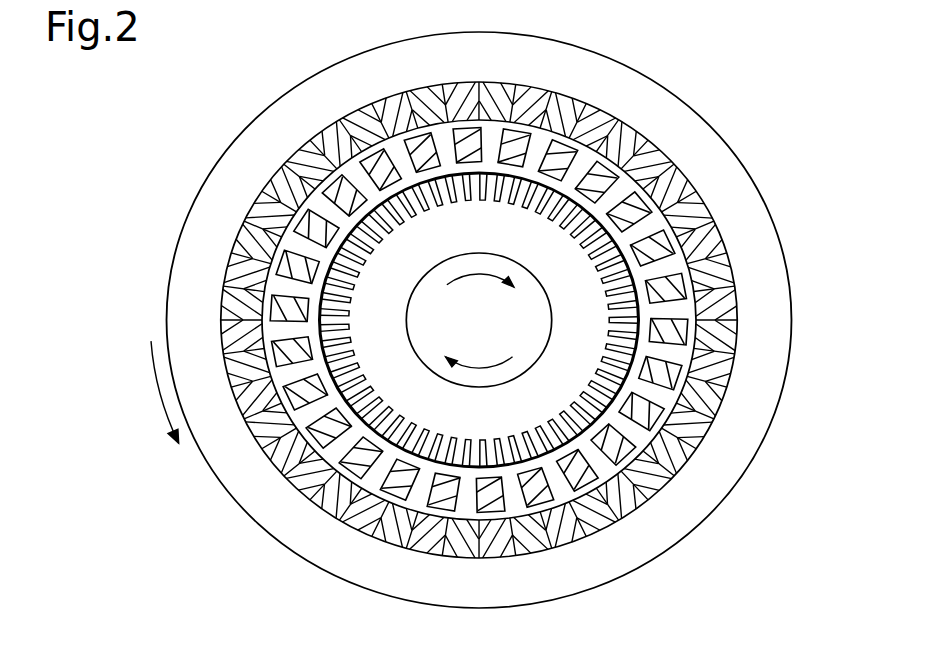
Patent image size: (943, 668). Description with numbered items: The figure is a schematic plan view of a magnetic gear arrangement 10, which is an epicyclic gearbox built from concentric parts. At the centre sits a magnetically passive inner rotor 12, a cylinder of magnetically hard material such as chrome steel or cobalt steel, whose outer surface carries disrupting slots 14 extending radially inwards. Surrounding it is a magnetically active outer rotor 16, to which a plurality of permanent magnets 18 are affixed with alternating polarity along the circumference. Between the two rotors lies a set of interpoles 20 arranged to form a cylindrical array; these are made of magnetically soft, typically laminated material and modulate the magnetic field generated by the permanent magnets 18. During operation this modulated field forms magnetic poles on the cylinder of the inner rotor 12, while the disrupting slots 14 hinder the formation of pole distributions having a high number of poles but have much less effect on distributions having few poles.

The magnetic gear arrangement 10 is at (258, 102).
The inner rotor 12 is at (382, 277).
The disrupting slots 14 is at (272, 177).
The outer rotor 16 is at (560, 72).
The permanent magnets 18 is at (672, 183).
The interpoles 20 is at (597, 182).